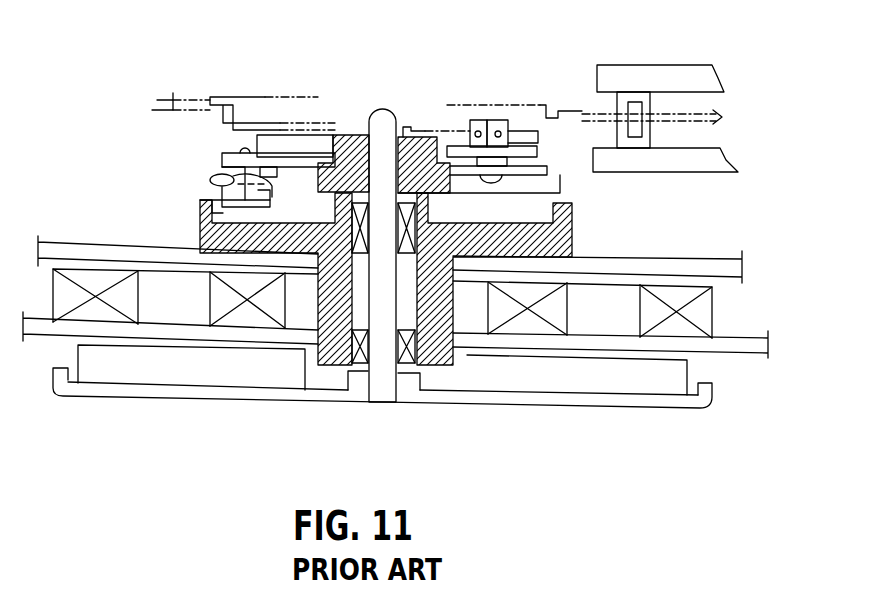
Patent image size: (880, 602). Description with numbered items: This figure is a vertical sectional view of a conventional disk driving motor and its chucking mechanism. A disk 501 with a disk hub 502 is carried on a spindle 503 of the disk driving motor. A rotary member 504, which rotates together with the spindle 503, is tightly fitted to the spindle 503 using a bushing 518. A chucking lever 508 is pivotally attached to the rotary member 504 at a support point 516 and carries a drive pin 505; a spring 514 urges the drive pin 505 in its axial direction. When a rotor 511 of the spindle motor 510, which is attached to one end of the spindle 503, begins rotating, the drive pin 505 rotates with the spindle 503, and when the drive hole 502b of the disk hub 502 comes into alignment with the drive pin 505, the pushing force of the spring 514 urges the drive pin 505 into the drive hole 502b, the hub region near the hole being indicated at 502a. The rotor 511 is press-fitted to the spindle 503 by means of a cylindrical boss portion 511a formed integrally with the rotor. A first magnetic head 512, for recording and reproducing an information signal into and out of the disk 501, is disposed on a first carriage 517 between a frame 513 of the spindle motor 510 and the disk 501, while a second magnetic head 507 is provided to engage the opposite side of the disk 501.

The disk 501 is at (173, 93).
The disk hub 502 is at (550, 104).
The circuit board portion 502a is at (408, 123).
The drive hole 502b is at (467, 130).
The spindle 503 is at (387, 108).
The rotary member 504 is at (533, 168).
The drive pin 505 is at (488, 118).
The second magnetic head 507 is at (658, 100).
The chucking lever 508 is at (297, 172).
The spindle motor 510 is at (202, 419).
The rotor 511 is at (253, 401).
The cylindrical boss portion 511a is at (353, 378).
The first magnetic head 512 is at (652, 140).
The frame 513 is at (736, 256).
The spring 514 is at (215, 173).
The support point 516 is at (200, 212).
The first carriage 517 is at (658, 173).
The bushing 518 is at (347, 137).